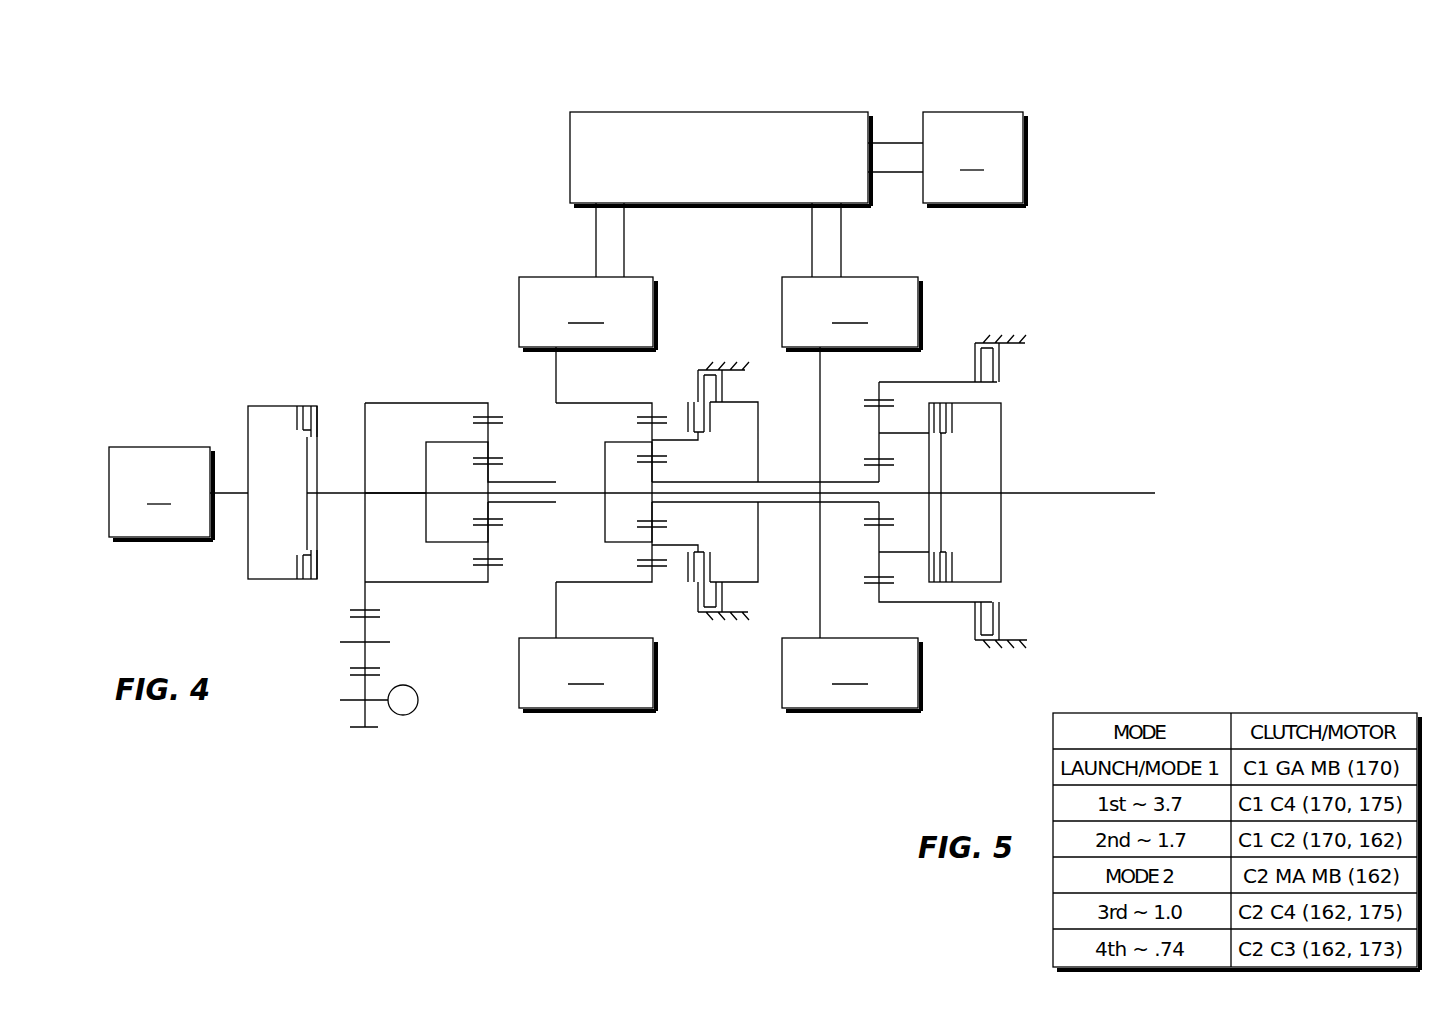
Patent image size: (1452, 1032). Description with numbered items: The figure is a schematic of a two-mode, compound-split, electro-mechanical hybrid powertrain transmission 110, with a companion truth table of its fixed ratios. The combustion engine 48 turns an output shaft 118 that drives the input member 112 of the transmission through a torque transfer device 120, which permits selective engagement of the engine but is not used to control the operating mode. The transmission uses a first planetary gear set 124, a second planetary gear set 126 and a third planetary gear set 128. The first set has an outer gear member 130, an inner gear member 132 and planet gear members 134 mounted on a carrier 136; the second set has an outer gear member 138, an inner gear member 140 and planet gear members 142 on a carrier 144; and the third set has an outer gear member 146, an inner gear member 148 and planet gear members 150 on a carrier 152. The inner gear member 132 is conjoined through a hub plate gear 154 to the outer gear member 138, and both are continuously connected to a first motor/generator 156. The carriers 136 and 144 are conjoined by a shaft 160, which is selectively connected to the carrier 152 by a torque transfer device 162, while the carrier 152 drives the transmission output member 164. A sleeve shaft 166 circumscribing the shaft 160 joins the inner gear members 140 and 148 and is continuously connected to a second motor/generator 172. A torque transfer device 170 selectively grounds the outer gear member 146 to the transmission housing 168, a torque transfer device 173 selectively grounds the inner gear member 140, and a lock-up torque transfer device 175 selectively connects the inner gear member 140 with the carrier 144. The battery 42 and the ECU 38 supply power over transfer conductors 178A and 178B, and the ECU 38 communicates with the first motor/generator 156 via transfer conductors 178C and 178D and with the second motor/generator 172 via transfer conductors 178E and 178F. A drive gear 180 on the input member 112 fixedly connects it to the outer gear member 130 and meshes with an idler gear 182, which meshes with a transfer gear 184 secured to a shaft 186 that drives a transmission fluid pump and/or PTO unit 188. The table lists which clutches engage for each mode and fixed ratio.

The ECU 38 is at (570, 140).
The battery 42 is at (974, 159).
The combustion engine 48 is at (161, 493).
The powertrain transmission 110 is at (290, 186).
The input member 112 is at (347, 492).
The output shaft 118 is at (232, 491).
The torque transfer device 120 is at (278, 372).
The first planetary gear set 124 is at (424, 372).
The second planetary gear set 126 is at (633, 391).
The third planetary gear set 128 is at (872, 389).
The outer gear member 130 is at (500, 416).
The inner gear member 132 is at (490, 466).
The planet gear members 134 is at (478, 443).
The carrier 136 is at (426, 520).
The outer gear member 138 is at (656, 416).
The inner gear member 140 is at (656, 466).
The planet gear members 142 is at (652, 440).
The carrier 144 is at (605, 522).
The outer gear member 146 is at (872, 400).
The inner gear member 148 is at (875, 476).
The planet gear members 150 is at (879, 436).
The carrier 152 is at (1001, 430).
The hub plate gear 154 is at (557, 418).
The first motor/generator 156 is at (587, 494).
The shaft 160 is at (790, 496).
The torque transfer device 162 is at (944, 436).
The transmission output member 164 is at (1142, 492).
The sleeve shaft 166 is at (782, 484).
The transmission housing 168 is at (700, 367).
The torque transfer device 170 is at (975, 356).
The second motor/generator 172 is at (851, 494).
The torque transfer device 173 is at (736, 373).
The torque transfer device 175 is at (729, 440).
The transfer conductor 178A is at (898, 142).
The transfer conductor 178B is at (888, 173).
The transfer conductor 178C is at (596, 238).
The transfer conductor 178D is at (625, 256).
The transfer conductor 178E is at (812, 256).
The transfer conductor 178F is at (841, 240).
The drive gear 180 is at (365, 548).
The idler gear 182 is at (365, 626).
The transfer gear 184 is at (365, 684).
The shaft 186 is at (375, 703).
The transmission fluid pump and/or PTO unit 188 is at (418, 702).